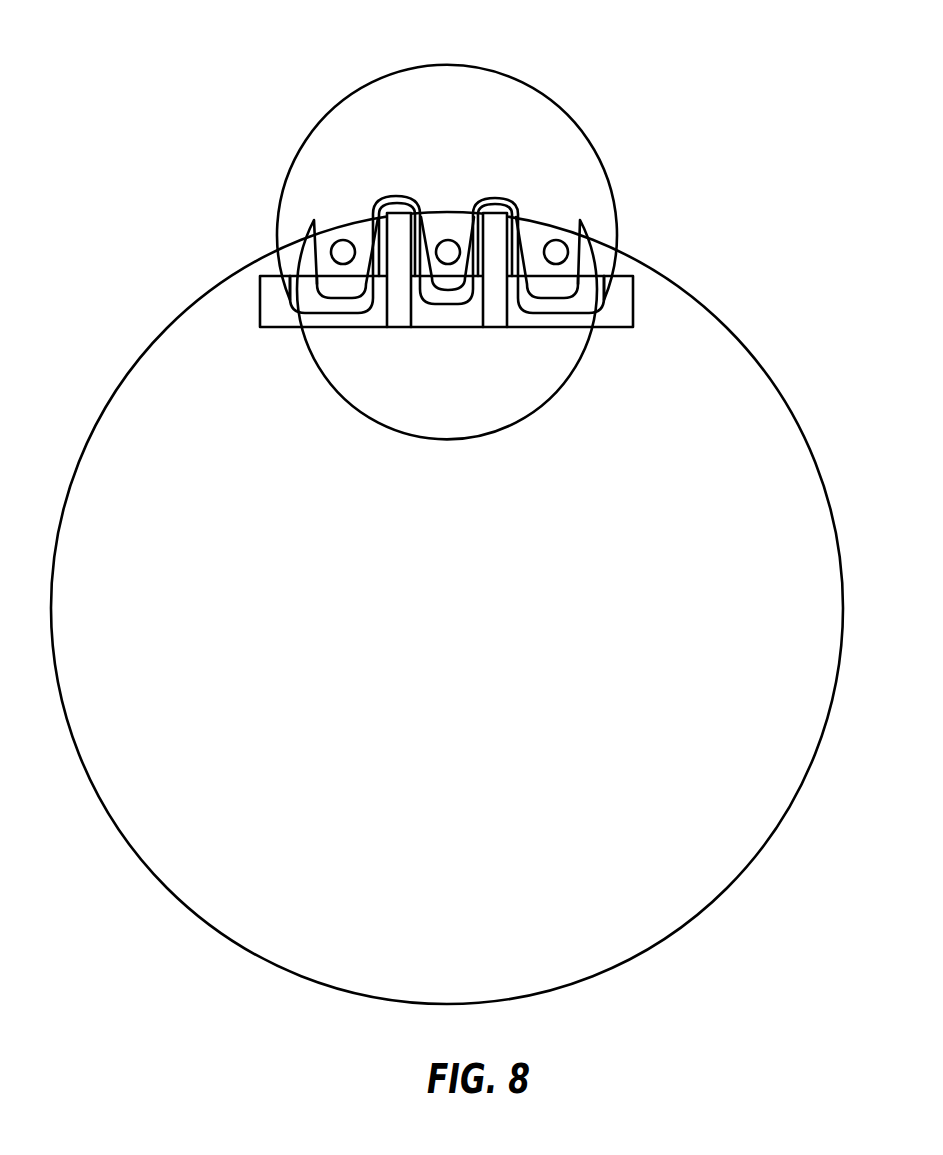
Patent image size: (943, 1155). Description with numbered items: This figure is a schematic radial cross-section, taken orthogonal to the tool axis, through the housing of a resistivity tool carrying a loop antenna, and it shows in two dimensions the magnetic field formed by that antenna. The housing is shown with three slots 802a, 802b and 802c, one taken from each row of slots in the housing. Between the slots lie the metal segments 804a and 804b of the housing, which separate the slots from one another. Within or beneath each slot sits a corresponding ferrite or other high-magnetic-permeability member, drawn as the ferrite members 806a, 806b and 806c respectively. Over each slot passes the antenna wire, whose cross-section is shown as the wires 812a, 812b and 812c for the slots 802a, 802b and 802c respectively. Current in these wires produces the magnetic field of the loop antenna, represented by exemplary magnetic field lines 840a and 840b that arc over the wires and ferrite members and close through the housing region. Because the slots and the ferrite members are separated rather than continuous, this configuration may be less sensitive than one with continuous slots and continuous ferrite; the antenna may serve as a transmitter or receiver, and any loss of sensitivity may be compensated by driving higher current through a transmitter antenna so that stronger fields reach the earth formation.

The slot 802a is at (296, 328).
The slot 802b is at (432, 328).
The slot 802c is at (558, 328).
The metal segment 804a is at (397, 213).
The metal segment 804b is at (494, 213).
The ferrite member 806a is at (275, 305).
The ferrite member 806b is at (448, 328).
The ferrite member 806c is at (622, 305).
The wire 812a is at (331, 252).
The wire 812b is at (447, 240).
The wire 812c is at (568, 252).
The magnetic field line 840a is at (567, 195).
The magnetic field line 840b is at (617, 207).